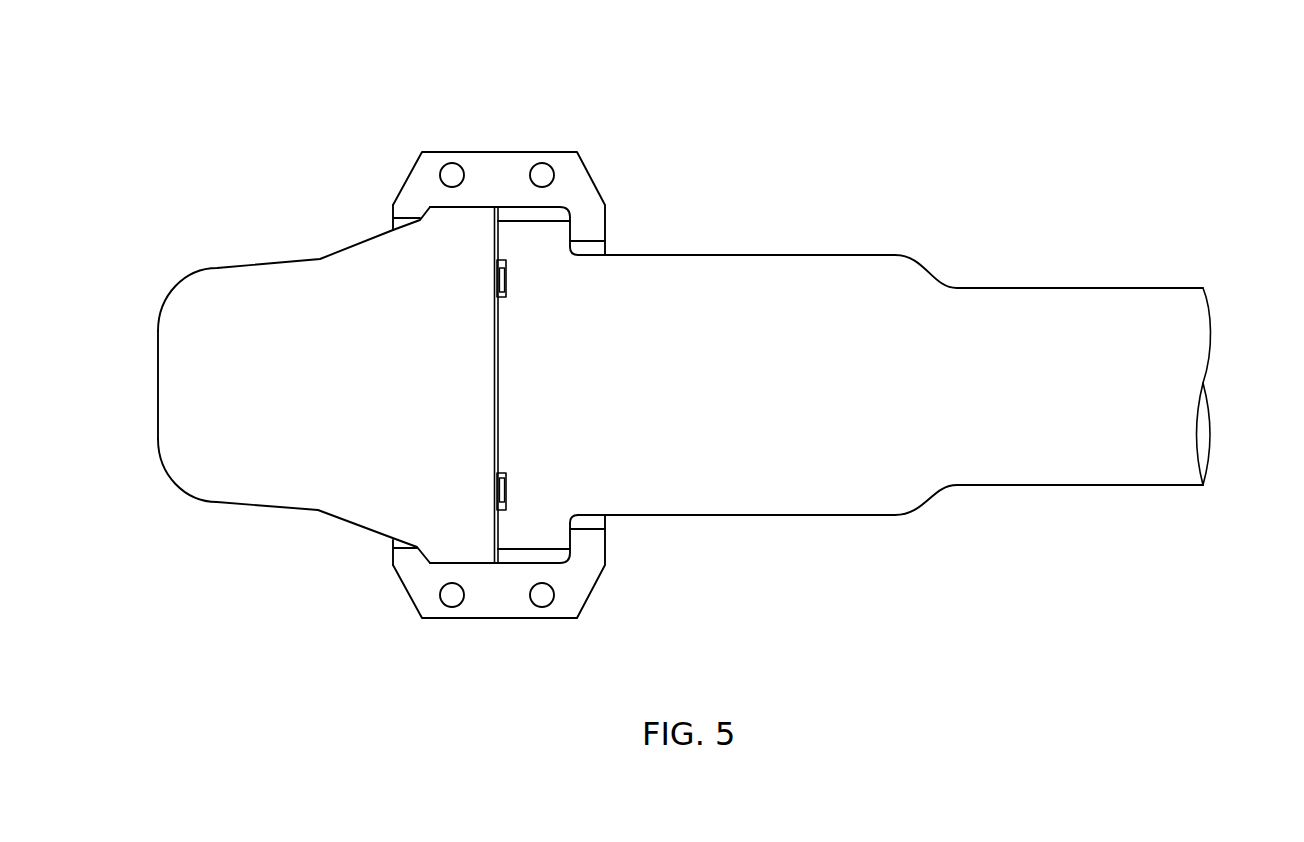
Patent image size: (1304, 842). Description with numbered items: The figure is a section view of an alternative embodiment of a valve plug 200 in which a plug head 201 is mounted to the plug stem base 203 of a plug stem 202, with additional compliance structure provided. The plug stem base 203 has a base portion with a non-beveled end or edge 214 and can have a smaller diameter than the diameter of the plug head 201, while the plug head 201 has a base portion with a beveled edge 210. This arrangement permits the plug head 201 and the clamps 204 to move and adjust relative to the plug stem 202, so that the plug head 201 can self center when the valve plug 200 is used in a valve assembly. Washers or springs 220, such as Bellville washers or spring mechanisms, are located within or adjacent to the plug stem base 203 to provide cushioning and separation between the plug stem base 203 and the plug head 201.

The valve plug 200 is at (808, 118).
The plug head 201 is at (298, 258).
The plug stem 202 is at (1008, 303).
The plug stem base 203 is at (729, 265).
The clamps 204 is at (483, 172).
The beveled edge 210 is at (425, 212).
The non-beveled end or edge 214 is at (580, 222).
The washers or springs 220 is at (499, 262).